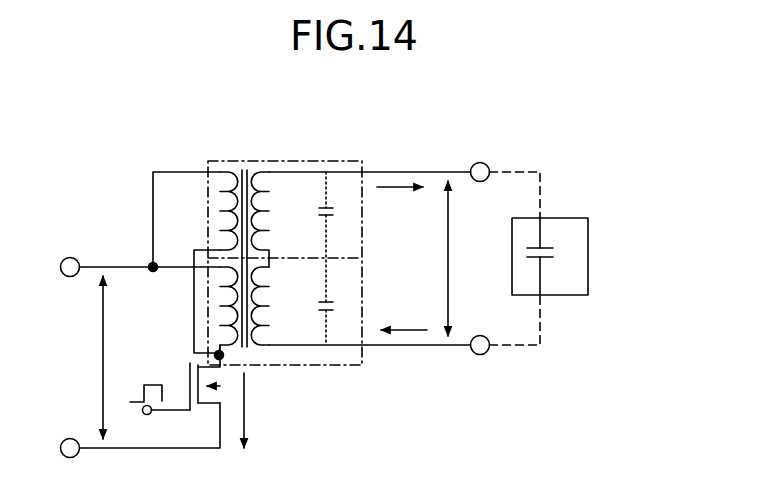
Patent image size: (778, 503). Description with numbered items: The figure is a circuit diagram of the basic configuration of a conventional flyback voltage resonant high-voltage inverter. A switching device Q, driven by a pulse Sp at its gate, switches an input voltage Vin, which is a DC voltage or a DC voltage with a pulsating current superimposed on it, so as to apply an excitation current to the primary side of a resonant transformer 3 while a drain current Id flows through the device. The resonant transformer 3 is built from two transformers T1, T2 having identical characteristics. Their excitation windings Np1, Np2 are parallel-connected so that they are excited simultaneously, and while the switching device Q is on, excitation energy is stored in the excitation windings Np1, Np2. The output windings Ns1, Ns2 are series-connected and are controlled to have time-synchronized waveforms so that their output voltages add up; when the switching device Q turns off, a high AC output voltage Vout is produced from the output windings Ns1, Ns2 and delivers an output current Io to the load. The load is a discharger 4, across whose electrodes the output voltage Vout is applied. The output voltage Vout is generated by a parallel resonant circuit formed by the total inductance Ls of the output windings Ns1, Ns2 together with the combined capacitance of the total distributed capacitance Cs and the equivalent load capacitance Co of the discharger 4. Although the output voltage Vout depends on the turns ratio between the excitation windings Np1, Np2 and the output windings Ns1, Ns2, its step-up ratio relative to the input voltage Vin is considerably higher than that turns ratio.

The resonant transformer 3 is at (228, 157).
The discharger 4 is at (588, 243).
The switching device Q is at (194, 377).
The drive pulse signal Sp is at (150, 394).
The transformer T1 is at (229, 326).
The transformer T2 is at (236, 243).
The excitation winding Np1 is at (193, 311).
The excitation winding Np2 is at (200, 262).
The output winding Ns1 is at (280, 306).
The output winding Ns2 is at (280, 219).
The total inductance Ls is at (285, 246).
The total distributed capacitance Cs is at (337, 258).
The equivalent capacitance Co is at (554, 256).
The input voltage Vin is at (84, 357).
The output voltage Vout is at (472, 258).
The output current Io is at (402, 258).
The drain current of Q Id is at (274, 410).